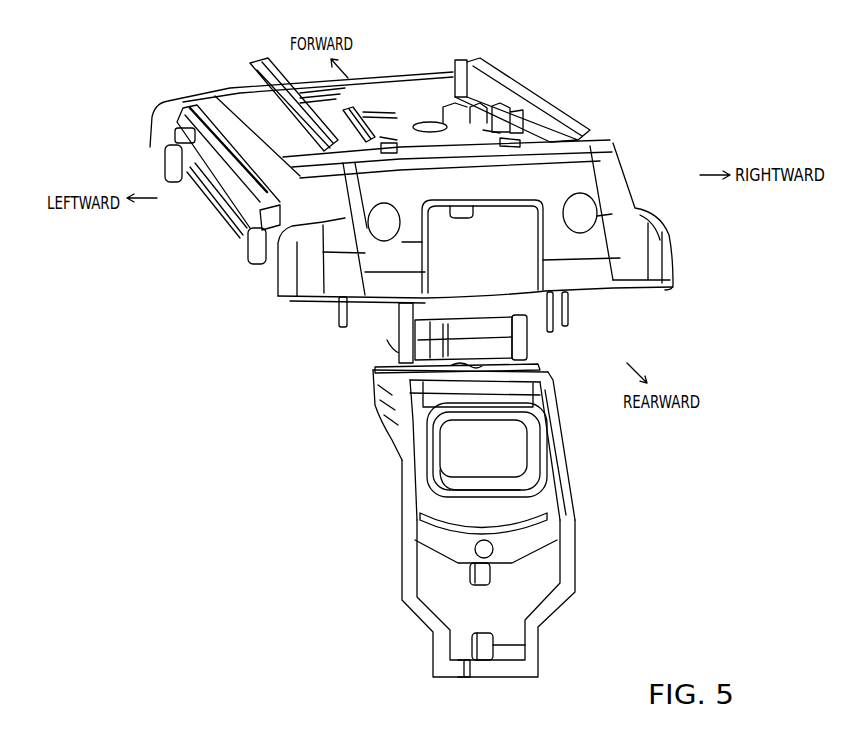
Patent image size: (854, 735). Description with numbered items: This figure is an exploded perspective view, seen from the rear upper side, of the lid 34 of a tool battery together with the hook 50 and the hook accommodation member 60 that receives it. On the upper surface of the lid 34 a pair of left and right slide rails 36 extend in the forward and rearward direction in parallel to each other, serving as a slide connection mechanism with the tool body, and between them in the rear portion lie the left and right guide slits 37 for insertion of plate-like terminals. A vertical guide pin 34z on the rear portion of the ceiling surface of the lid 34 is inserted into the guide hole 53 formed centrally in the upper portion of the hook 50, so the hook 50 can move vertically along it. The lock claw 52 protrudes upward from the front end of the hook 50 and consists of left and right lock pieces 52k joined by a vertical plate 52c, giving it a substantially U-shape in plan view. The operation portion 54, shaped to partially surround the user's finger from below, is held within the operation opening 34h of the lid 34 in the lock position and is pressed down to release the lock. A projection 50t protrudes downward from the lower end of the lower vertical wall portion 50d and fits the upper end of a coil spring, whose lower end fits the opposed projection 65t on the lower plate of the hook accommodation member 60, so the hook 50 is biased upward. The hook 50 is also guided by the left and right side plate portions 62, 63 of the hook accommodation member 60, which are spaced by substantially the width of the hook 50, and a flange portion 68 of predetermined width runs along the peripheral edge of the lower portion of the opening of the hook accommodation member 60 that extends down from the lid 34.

The lid 34 is at (556, 87).
The operation opening 34h is at (547, 217).
The vertical guide pin 34z is at (462, 215).
The slide rail 36 is at (235, 100).
The guide slit 37 is at (333, 120).
The lock claw 52 is at (470, 333).
The vertical plate 52c is at (493, 337).
The lock piece 52k is at (523, 343).
The guide hole 53 is at (493, 373).
The operation portion 54 is at (490, 467).
The hook 50 is at (426, 567).
The lower vertical wall portion 50d is at (493, 510).
The projection 50t is at (497, 575).
The hook accommodation member 60 is at (397, 482).
The left side plate portion 62 is at (400, 431).
The right side plate portion 63 is at (573, 447).
The projection 65t is at (483, 647).
The flange portion 68 is at (460, 670).